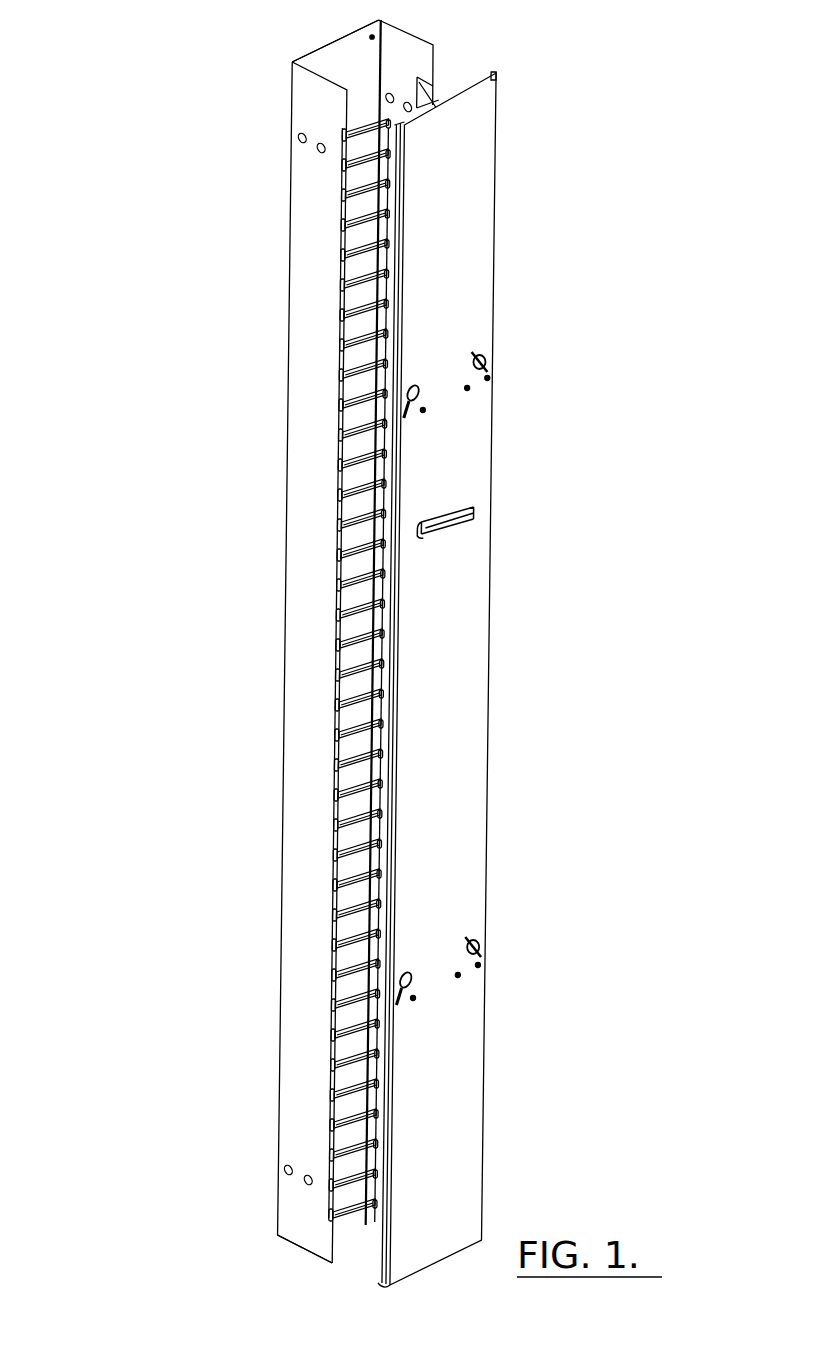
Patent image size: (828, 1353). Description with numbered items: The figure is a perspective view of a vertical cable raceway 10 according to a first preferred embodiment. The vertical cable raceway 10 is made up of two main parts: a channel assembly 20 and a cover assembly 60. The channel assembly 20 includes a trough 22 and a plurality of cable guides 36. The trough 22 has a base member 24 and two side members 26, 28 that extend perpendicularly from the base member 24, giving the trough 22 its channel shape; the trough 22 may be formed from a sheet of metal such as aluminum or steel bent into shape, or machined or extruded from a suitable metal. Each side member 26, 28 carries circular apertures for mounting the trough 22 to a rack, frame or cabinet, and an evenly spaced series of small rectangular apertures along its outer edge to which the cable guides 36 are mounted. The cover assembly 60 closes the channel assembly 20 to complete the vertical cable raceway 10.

The vertical cable raceway 10 is at (250, 1198).
The channel assembly 20 is at (210, 245).
The trough 22 is at (292, 80).
The base member 24 is at (347, 50).
The side member 26 is at (308, 160).
The side member 28 is at (407, 50).
The cable guides 36 is at (330, 650).
The cover assembly 60 is at (537, 249).